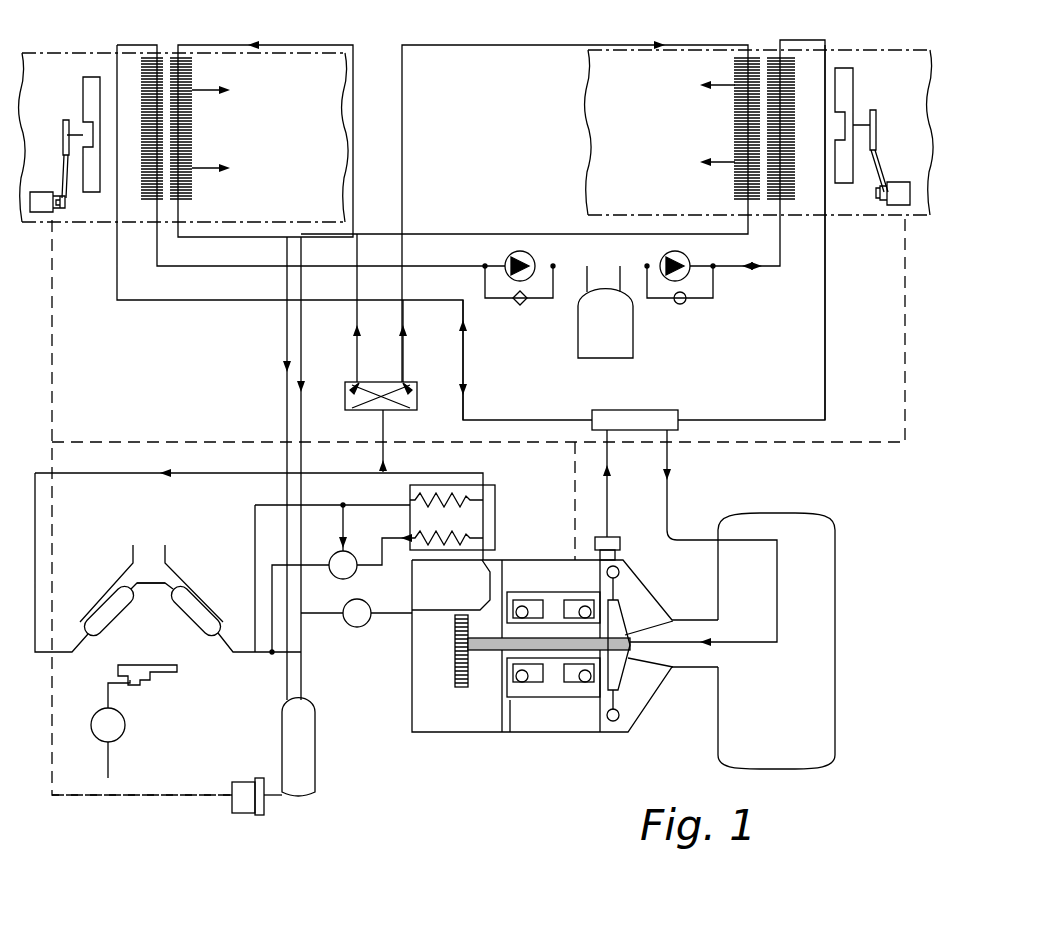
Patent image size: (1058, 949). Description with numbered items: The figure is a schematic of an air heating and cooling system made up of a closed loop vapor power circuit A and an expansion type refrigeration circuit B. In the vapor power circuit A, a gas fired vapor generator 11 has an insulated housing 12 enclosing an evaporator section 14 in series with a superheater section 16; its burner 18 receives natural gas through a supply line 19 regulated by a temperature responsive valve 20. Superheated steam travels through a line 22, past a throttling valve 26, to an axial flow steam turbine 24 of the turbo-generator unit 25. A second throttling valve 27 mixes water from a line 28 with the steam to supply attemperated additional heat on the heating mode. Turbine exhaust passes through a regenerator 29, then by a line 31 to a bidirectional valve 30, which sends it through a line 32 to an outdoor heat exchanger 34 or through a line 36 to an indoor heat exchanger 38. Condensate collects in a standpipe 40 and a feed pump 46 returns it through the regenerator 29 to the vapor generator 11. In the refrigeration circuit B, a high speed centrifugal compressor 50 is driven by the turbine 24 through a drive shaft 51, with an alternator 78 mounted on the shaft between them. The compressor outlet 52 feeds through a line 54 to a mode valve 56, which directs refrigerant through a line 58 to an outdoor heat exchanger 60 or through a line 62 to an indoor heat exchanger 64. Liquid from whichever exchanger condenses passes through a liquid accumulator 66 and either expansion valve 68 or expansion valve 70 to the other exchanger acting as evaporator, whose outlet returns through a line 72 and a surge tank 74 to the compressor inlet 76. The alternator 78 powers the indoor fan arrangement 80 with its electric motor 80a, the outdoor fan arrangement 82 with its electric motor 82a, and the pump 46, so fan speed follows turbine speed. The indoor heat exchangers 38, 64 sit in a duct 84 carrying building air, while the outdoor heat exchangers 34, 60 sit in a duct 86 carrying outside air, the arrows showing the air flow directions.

The gas fired vapor generator 11 is at (165, 570).
The insulated housing 12 is at (90, 584).
The evaporator section 14 is at (110, 618).
The superheater section 16 is at (184, 618).
The burner 18 is at (158, 672).
The supply line 19 is at (108, 760).
The temperature responsive valve 20 is at (125, 724).
The line 22 is at (305, 664).
The axial flow steam turbine 24 is at (456, 686).
The turbo-generator unit 25 is at (516, 562).
The throttling valve 26 is at (356, 627).
The second throttling valve 27 is at (335, 579).
The line 28 is at (254, 524).
The regenerator 29 is at (495, 485).
The bidirectional valve 30 is at (348, 408).
The line 31 is at (383, 428).
The line 32 is at (357, 302).
The outdoor heat exchanger 34 is at (194, 76).
The line 36 is at (404, 300).
The indoor heat exchanger 38 is at (742, 62).
The standpipe 40 is at (314, 760).
The feed pump 46 is at (252, 812).
The high speed centrifugal compressor 50 is at (635, 672).
The drive shaft 51 is at (554, 646).
The outlet 52 is at (618, 550).
The line 54 is at (607, 490).
The mode valve 56 is at (624, 412).
The line 58 is at (472, 354).
The outdoor heat exchanger 60 is at (152, 70).
The line 62 is at (825, 300).
The indoor heat exchanger 64 is at (792, 64).
The liquid accumulator 66 is at (633, 338).
The expansion valve 68 is at (664, 254).
The expansion valve 70 is at (533, 256).
The line 72 is at (667, 522).
The surge tank 74 is at (834, 627).
The inlet 76 is at (662, 632).
The alternator 78 is at (522, 704).
The indoor electric motor driven fan arrangement 80 is at (856, 94).
The electric motor 80a is at (892, 205).
The outdoor electric motor driven fan arrangement 82 is at (87, 88).
The electric motor 82a is at (50, 212).
The duct 84 is at (708, 208).
The duct 86 is at (230, 214).
The vapor power circuit A is at (230, 801).
The refrigeration circuit B is at (808, 418).